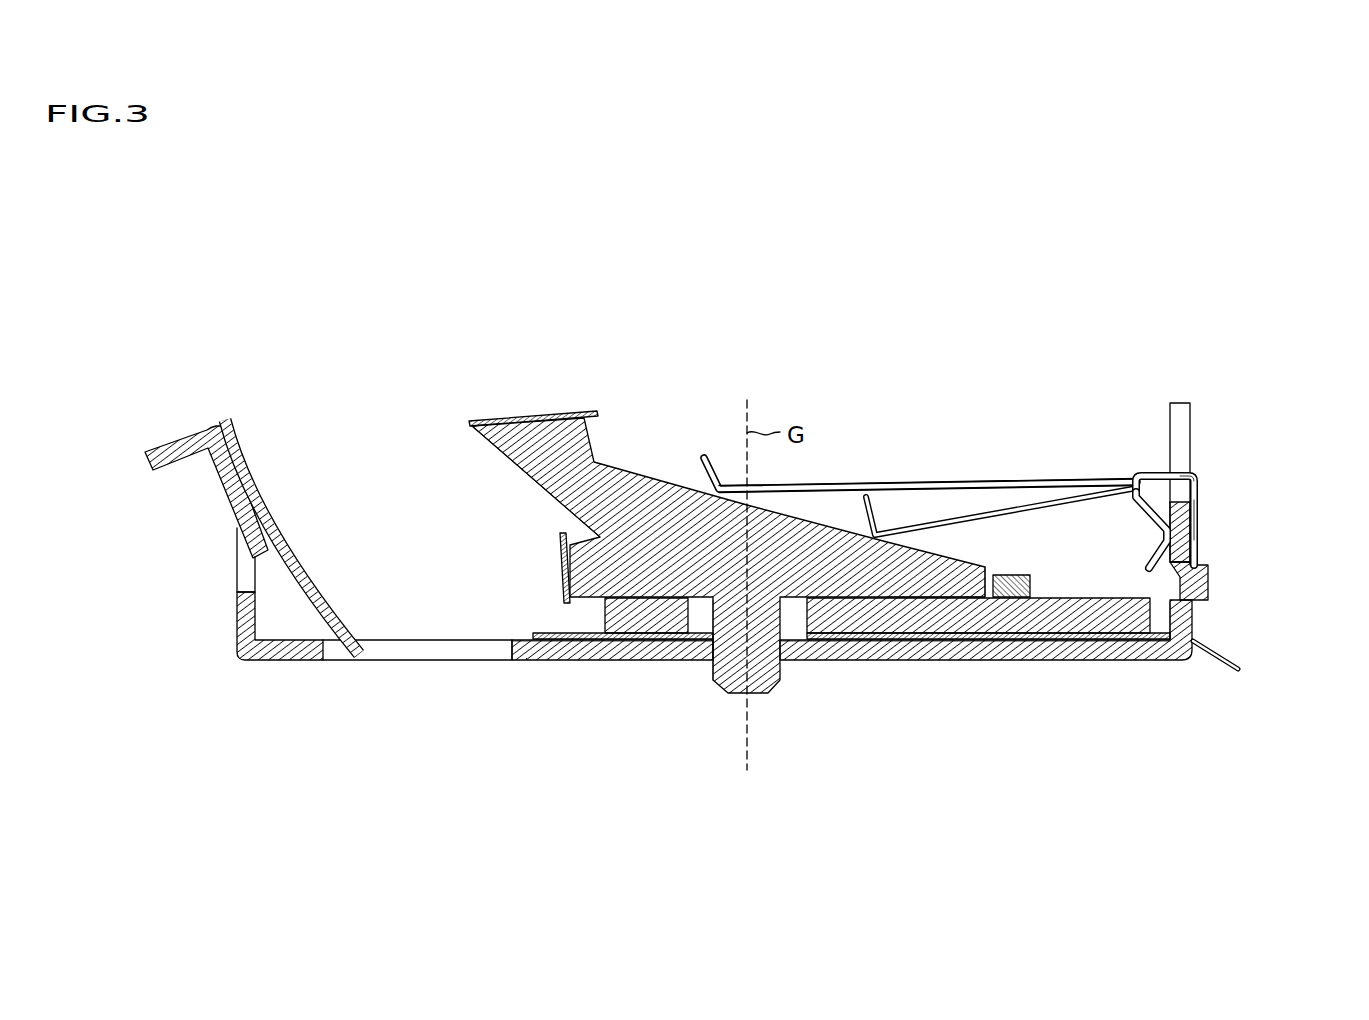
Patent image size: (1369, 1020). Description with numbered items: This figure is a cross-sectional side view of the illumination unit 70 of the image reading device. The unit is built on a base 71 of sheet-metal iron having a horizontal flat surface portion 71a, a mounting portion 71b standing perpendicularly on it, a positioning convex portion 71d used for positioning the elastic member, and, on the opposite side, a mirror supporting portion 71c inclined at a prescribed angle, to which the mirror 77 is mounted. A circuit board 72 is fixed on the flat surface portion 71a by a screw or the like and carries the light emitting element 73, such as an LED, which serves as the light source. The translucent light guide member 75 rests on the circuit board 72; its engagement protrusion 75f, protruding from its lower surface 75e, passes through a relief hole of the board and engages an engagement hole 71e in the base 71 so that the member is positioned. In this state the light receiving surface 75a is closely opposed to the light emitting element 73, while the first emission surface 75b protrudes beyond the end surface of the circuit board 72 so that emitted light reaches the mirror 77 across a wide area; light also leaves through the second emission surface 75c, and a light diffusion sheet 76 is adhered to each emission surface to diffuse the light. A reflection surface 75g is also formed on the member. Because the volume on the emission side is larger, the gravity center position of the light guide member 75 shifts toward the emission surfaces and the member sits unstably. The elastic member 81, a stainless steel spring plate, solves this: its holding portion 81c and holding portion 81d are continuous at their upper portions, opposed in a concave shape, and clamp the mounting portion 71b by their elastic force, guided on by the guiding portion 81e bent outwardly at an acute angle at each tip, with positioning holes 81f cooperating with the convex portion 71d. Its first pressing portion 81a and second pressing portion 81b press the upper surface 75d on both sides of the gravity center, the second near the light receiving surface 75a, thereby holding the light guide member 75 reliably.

The illumination unit 70 is at (171, 353).
The base 71 is at (560, 664).
The flat surface portion 71a is at (827, 662).
The mounting portion 71b is at (1193, 630).
The mirror supporting portion 71c is at (217, 490).
The positioning convex portion 71d is at (1209, 587).
The engagement hole 71e is at (690, 660).
The circuit board 72 is at (1072, 620).
The light emitting element 73 is at (1009, 600).
The light guide member 75 is at (622, 420).
The light receiving surface 75a is at (984, 592).
The first emission surface 75b is at (533, 636).
The second emission surface 75c is at (525, 415).
The upper surface 75d is at (681, 478).
The lower surface 75e is at (889, 599).
The engagement protrusion 75f is at (710, 673).
The reflection surface 75g is at (530, 478).
The light diffusion sheet 76 is at (567, 412).
The mirror 77 is at (257, 483).
The elastic member 81 is at (1058, 466).
The first pressing portion 81a is at (907, 480).
The second pressing portion 81b is at (957, 516).
The holding portion 81c is at (1199, 522).
The holding portion 81d is at (1199, 476).
The guiding portion 81e is at (1199, 548).
The positioning hole 81f is at (1200, 613).